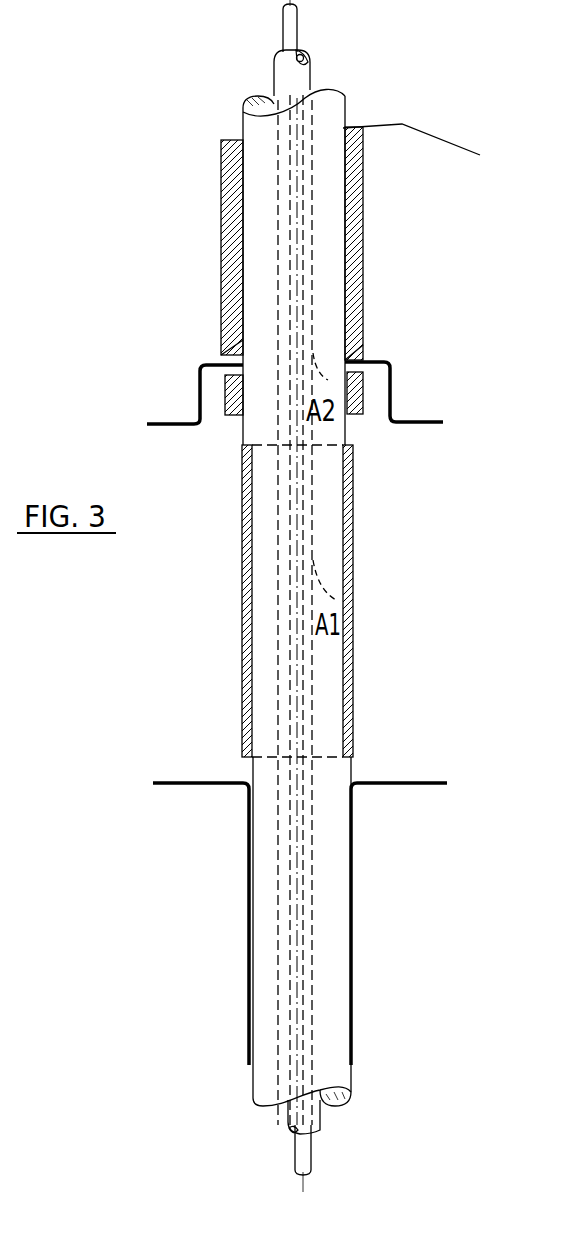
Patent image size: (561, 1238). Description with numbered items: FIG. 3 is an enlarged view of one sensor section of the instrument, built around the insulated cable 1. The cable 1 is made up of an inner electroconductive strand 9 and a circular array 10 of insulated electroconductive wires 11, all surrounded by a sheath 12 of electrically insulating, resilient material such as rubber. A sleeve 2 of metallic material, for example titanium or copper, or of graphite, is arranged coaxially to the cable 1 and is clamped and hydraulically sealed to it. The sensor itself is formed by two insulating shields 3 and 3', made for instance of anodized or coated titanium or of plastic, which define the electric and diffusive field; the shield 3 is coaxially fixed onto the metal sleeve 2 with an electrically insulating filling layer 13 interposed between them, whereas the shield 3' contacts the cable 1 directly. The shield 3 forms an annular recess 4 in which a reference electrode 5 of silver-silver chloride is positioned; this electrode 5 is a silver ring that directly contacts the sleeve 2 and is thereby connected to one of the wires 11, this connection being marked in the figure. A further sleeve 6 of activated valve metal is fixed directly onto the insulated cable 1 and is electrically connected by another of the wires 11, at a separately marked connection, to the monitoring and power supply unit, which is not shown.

The insulated cable 1 is at (353, 1078).
The sleeve 2 is at (424, 151).
The insulating shield 3 is at (326, 416).
The insulating shield 3' is at (332, 893).
The annular recess 4 is at (218, 390).
The reference electrode 5 is at (363, 385).
The sleeve 6 is at (353, 668).
The inner electroconductive strand 9 is at (297, 18).
The circular array 10 is at (310, 70).
The insulated electroconductive wires 11 is at (342, 392).
The sheath 12 is at (325, 112).
The electrically insulating filling layer 13 is at (352, 277).